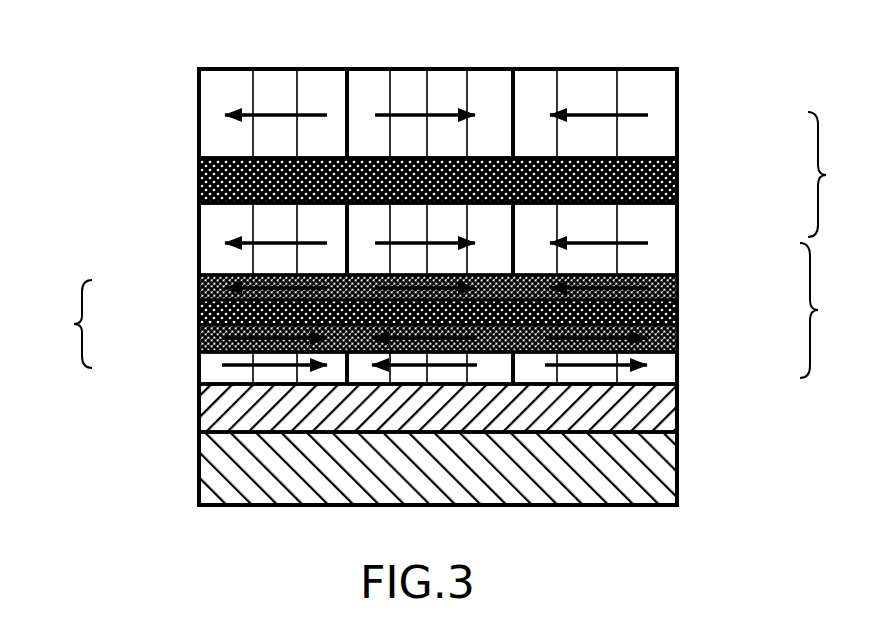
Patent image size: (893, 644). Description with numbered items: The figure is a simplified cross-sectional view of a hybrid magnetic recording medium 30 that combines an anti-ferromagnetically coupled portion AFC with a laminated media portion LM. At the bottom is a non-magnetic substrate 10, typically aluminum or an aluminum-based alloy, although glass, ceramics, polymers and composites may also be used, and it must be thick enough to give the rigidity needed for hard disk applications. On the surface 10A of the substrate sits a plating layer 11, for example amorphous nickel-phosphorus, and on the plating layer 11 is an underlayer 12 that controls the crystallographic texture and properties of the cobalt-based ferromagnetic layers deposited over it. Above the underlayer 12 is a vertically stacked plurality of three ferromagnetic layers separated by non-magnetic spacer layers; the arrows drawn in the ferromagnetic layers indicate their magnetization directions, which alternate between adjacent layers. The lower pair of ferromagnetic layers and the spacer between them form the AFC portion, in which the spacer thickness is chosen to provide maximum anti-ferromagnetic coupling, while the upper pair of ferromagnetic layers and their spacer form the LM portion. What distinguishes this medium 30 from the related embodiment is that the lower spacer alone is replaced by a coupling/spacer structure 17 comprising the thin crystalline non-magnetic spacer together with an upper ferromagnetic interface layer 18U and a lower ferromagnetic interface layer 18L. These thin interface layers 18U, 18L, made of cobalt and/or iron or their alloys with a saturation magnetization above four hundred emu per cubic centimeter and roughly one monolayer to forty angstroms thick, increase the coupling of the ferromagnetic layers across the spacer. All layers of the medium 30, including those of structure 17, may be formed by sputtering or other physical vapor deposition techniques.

The magnetic recording medium 30 is at (150, 48).
The upper ferromagnetic interface layer 18U is at (188, 290).
The lower ferromagnetic interface layer 18L is at (188, 340).
The coupling/spacer layer structure 17 is at (63, 324).
The underlayer 12 is at (697, 407).
The plating layer 11 is at (684, 430).
The non-magnetic substrate 10 is at (697, 483).
The substrate surface 10A is at (195, 433).
The laminated media portion LM is at (837, 174).
The anti-ferromagnetically coupled portion AFC is at (836, 310).